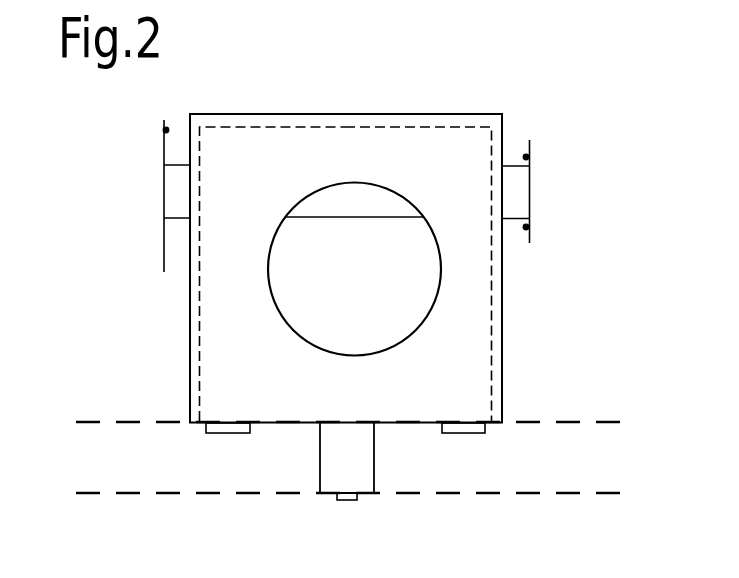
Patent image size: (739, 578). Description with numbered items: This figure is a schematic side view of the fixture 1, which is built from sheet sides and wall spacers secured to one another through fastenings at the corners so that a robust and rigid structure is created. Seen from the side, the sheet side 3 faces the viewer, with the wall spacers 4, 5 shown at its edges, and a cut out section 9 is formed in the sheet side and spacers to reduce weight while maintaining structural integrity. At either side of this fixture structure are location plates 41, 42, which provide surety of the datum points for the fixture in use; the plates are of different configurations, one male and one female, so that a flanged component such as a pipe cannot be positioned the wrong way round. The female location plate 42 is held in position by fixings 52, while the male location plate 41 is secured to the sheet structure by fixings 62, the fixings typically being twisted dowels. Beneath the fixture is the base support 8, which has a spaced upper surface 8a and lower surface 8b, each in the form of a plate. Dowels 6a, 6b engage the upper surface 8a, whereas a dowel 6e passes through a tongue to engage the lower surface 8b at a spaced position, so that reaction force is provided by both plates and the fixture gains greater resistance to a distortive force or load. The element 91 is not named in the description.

The fixture 1 is at (566, 140).
The sheet side 3 is at (435, 140).
The wall spacer 4 is at (197, 322).
The wall spacer 5 is at (492, 340).
The cut out section 9 is at (442, 255).
The location plate 41 is at (164, 149).
The location plate 42 is at (532, 232).
The fixings 52 is at (526, 155).
The fixings 62 is at (166, 128).
The dowel 6a is at (233, 434).
The dowel 6b is at (473, 434).
The dowel 6e is at (343, 500).
The stem 91 is at (374, 463).
The base support 8 is at (359, 424).
The upper surface 8a is at (597, 421).
The lower surface 8b is at (520, 495).